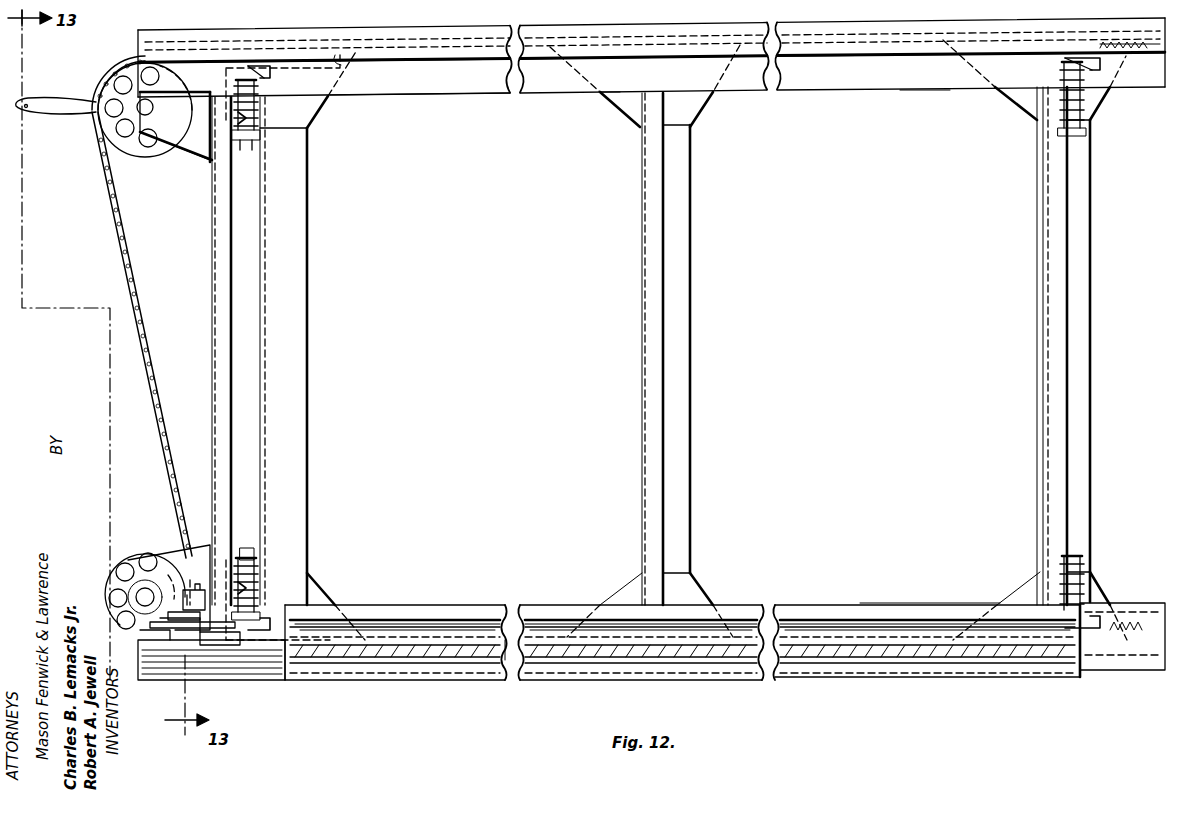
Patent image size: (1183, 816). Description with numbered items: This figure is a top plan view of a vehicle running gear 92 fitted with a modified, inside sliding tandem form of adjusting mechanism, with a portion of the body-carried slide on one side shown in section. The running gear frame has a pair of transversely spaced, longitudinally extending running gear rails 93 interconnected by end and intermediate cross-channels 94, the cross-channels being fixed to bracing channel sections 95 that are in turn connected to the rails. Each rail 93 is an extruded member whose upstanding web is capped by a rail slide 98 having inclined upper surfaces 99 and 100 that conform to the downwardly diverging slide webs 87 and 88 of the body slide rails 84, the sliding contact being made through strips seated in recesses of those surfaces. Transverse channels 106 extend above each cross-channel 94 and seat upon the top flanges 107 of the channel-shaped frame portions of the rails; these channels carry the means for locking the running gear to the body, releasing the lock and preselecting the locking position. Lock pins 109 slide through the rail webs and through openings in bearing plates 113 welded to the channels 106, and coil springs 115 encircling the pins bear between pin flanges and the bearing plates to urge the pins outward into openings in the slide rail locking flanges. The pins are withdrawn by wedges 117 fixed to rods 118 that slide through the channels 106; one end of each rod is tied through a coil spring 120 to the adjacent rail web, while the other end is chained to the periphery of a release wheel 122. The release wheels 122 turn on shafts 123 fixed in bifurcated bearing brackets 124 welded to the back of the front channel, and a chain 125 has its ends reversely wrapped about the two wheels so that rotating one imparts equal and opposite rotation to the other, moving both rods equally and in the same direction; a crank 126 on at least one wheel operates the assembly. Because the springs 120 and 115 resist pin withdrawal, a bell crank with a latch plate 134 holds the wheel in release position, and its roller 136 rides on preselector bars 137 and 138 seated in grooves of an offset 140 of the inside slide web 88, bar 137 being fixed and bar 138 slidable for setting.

The slide rail 84 is at (452, 672).
The outside slide web 87 is at (381, 674).
The inside slide web 88 is at (375, 620).
The running gear 92 is at (509, 680).
The running gear rail 93 is at (870, 24).
The cross-channel 94 is at (305, 402).
The bracing channel section 95 is at (320, 106).
The rail slide 98 is at (669, 28).
The inclined upper surface 99 is at (406, 36).
The inclined upper surface 100 is at (418, 64).
The channel 106 is at (215, 356).
The top flange 107 is at (478, 86).
The lock pin 109 is at (250, 140).
The bearing plate 113 is at (246, 558).
The coil spring 115 is at (248, 114).
The wedge 117 is at (266, 88).
The rod 118 is at (344, 54).
The coil spring 120 is at (1134, 52).
The release wheel 122 is at (164, 142).
The shaft 123 is at (148, 108).
The bifurcated bearing bracket 124 is at (198, 156).
The chain 125 is at (126, 274).
The crank 126 is at (58, 104).
The latch plate 134 is at (169, 642).
The roller 136 is at (197, 646).
The preselector bar 137 is at (476, 626).
The preselector bar 138 is at (420, 620).
The offset 140 is at (454, 622).